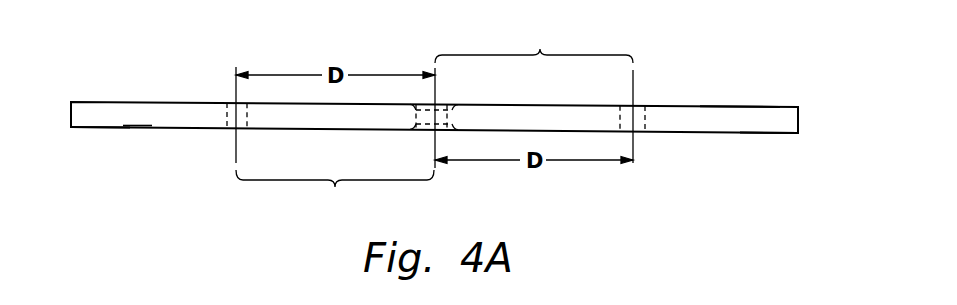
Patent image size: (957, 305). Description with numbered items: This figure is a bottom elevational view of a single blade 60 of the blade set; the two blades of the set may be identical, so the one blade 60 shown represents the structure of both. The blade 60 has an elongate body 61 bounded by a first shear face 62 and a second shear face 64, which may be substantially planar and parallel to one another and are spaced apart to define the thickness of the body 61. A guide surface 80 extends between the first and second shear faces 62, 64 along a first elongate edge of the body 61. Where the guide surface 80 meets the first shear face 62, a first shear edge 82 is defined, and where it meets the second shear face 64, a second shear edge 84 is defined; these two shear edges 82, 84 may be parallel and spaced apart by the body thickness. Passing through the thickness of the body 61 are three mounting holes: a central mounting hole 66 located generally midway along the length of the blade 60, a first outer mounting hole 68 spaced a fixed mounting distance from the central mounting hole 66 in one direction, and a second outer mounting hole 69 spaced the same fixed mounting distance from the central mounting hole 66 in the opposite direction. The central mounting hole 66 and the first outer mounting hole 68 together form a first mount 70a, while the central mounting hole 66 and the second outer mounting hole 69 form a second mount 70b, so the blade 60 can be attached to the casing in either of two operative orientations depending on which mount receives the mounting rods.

The blade 60 is at (812, 121).
The body 61 is at (736, 116).
The first shear face 62 is at (780, 107).
The second shear face 64 is at (757, 134).
The central mounting hole 66 is at (448, 100).
The first outer mounting hole 68 is at (228, 102).
The second outer mounting hole 69 is at (645, 105).
The first mount 70a is at (335, 187).
The second mount 70b is at (540, 49).
The guide surface 80 is at (139, 114).
The first shear edge 82 is at (97, 101).
The second shear edge 84 is at (93, 129).